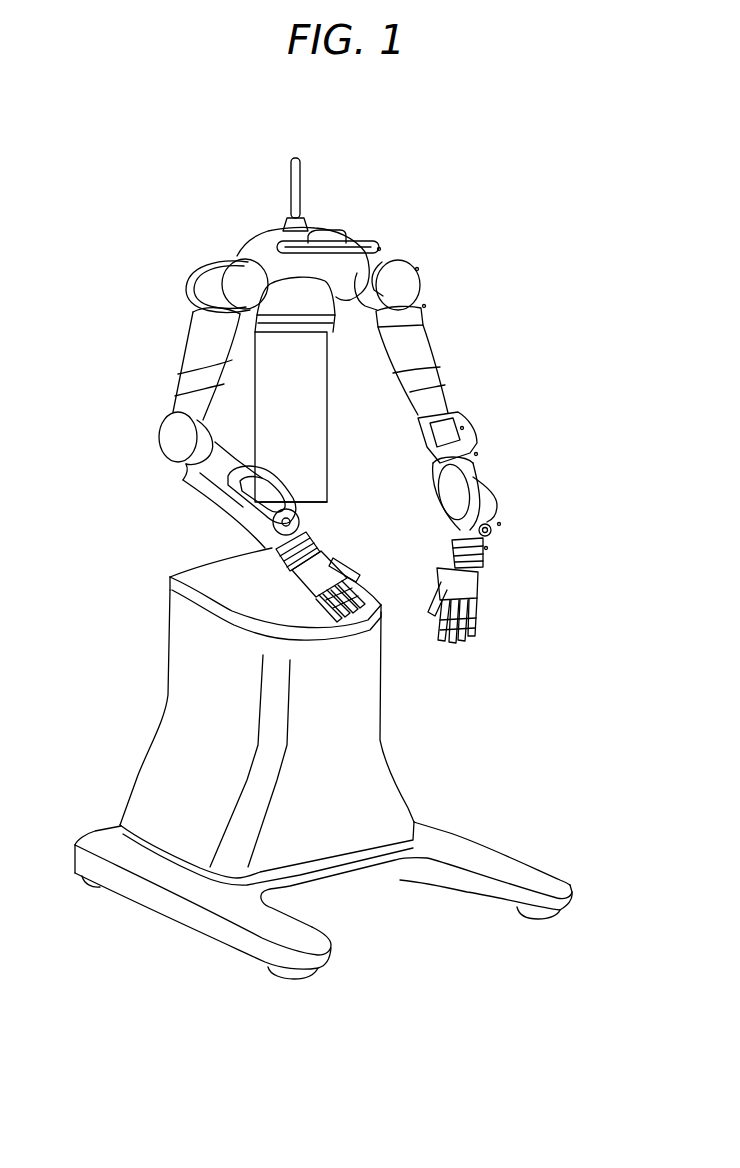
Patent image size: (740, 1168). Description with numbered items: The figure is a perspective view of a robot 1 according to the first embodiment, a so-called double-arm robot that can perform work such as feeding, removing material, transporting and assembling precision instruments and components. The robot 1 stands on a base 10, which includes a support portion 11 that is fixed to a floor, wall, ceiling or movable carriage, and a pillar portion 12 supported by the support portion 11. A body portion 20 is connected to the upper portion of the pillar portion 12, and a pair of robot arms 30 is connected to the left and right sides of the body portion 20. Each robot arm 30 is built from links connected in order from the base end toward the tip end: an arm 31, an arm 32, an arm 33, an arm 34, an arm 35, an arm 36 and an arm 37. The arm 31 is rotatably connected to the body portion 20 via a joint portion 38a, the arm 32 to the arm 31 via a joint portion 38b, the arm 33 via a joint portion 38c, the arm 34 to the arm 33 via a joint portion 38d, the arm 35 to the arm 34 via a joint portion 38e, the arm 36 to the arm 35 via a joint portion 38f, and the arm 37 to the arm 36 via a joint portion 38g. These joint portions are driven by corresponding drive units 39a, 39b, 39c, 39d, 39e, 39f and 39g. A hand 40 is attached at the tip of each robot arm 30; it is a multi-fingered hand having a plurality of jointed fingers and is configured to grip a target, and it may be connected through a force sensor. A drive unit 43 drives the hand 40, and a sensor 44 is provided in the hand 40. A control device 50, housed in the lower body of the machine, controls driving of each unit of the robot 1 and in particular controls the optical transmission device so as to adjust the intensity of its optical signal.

The robot 1 is at (470, 118).
The base 10 is at (140, 751).
The support portion 11 is at (157, 775).
The pillar portion 12 is at (307, 436).
The body portion 20 is at (268, 226).
The robot arm 30 is at (184, 323).
The arm 31 is at (210, 280).
The arm 32 is at (197, 288).
The arm 33 is at (187, 351).
The arm 34 is at (167, 443).
The arm 35 is at (203, 471).
The arm 36 is at (253, 528).
The arm 37 is at (262, 563).
The hand 40 is at (300, 566).
The drive unit 43 is at (429, 639).
The sensor 44 is at (470, 641).
The control device 50 is at (345, 771).
The joint portion 38a is at (420, 199).
The drive unit 39a is at (380, 247).
The joint portion 38b is at (486, 234).
The drive unit 39b is at (418, 268).
The joint portion 38c is at (506, 278).
The drive unit 39c is at (425, 305).
The joint portion 38d is at (539, 395).
The drive unit 39d is at (463, 427).
The joint portion 38e is at (567, 439).
The drive unit 39e is at (477, 454).
The joint portion 38f is at (574, 516).
The drive unit 39f is at (500, 524).
The joint portion 38g is at (572, 547).
The drive unit 39g is at (487, 548).